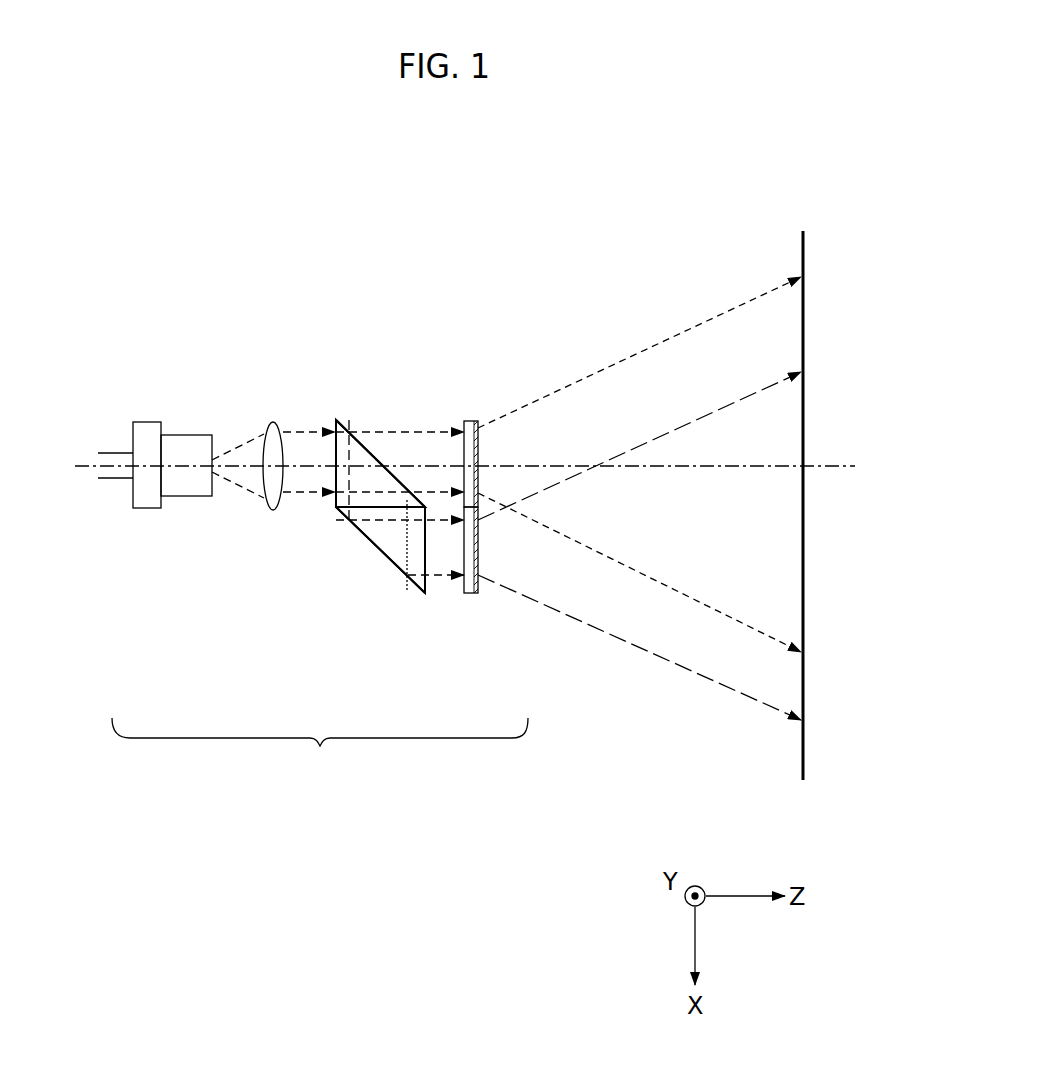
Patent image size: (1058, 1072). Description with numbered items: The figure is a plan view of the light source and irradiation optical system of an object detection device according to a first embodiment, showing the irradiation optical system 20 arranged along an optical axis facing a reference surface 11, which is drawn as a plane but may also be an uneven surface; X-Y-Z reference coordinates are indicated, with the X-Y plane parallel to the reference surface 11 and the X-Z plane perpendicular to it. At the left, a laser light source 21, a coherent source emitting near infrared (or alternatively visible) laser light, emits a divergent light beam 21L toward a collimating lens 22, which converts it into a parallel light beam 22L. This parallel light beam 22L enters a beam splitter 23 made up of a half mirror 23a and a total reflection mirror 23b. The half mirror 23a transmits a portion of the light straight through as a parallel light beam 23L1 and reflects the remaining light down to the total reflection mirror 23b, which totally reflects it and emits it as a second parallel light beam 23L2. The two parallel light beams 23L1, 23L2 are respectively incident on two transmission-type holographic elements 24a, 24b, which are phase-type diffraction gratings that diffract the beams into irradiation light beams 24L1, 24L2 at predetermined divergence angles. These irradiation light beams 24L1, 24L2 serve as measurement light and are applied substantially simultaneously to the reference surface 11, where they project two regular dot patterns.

The reference surface 11 is at (800, 262).
The irradiation optical system 20 is at (337, 777).
The laser light source 21 is at (145, 510).
The divergent light beam 21L is at (240, 440).
The collimating lens 22 is at (275, 512).
The parallel light beam 22L is at (290, 432).
The beam splitter 23 is at (390, 570).
The half mirror 23a is at (363, 445).
The total reflection mirror 23b is at (368, 540).
The parallel light beam 23L1 is at (432, 500).
The parallel light beam 23L2 is at (432, 580).
The holographic element 24a is at (470, 421).
The holographic element 24b is at (470, 595).
The irradiation light beam 24L1 is at (645, 346).
The irradiation light beam 24L2 is at (632, 650).